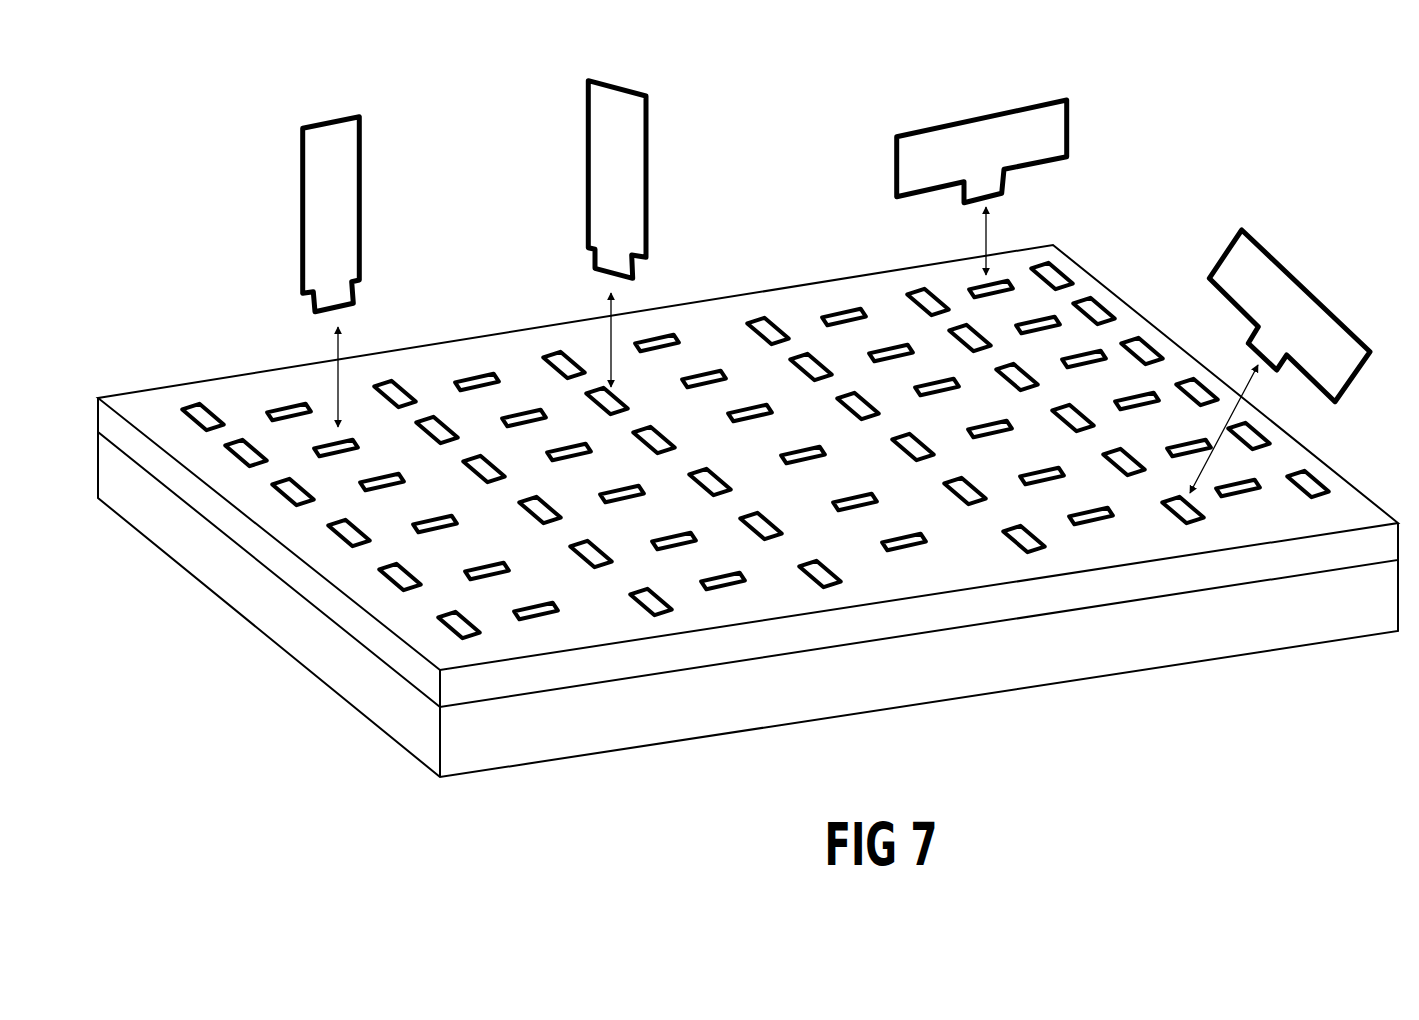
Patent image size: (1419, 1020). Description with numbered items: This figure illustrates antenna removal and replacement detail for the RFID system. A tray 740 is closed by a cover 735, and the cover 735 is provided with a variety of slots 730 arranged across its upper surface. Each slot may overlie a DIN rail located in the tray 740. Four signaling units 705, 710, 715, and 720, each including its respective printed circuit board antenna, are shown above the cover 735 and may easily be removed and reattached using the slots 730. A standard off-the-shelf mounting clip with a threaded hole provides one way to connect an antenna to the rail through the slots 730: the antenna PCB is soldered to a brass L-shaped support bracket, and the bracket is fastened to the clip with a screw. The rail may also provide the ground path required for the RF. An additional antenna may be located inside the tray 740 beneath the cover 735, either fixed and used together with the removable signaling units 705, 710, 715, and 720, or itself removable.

The signaling unit 705 is at (330, 117).
The signaling unit 710 is at (610, 82).
The signaling unit 715 is at (970, 112).
The signaling unit 720 is at (1265, 248).
The slots 730 is at (205, 404).
The cover 735 is at (1156, 587).
The tray 740 is at (1006, 669).